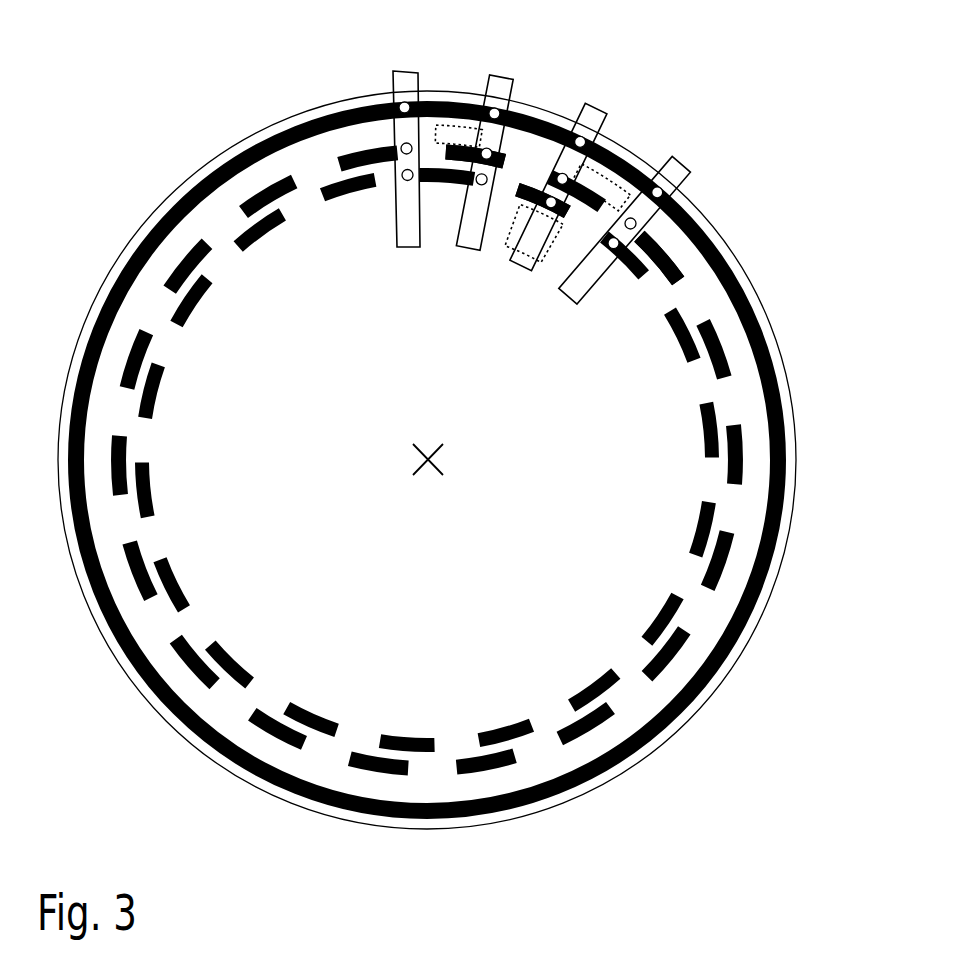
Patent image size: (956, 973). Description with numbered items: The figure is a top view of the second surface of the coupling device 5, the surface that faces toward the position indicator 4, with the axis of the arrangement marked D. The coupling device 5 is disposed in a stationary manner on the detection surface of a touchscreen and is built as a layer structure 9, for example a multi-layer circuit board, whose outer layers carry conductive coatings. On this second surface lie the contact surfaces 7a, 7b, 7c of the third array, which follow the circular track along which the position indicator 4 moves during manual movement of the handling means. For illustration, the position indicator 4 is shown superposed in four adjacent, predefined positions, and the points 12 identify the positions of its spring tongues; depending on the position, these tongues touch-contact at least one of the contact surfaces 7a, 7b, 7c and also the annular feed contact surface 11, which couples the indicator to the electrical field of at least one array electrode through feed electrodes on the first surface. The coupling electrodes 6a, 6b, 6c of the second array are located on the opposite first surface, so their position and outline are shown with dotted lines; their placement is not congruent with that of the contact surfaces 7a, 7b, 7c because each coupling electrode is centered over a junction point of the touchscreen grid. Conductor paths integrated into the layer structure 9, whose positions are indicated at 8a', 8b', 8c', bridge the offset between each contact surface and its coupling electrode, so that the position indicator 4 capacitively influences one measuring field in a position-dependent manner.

The position indicator 4 is at (406, 60).
The coupling device 5 is at (789, 279).
The coupling electrode 6a is at (457, 121).
The coupling electrode 6b is at (515, 215).
The coupling electrode 6c is at (684, 178).
The contact surface 7a is at (498, 109).
The contact surface 7b is at (542, 196).
The contact surface 7c is at (561, 166).
The virtual marking position 8a' is at (455, 190).
The virtual marking position 8b' is at (515, 260).
The virtual marking position 8c' is at (598, 272).
The layer structure 9 is at (535, 693).
The feed contact surface 11 is at (433, 818).
The points 12 is at (392, 128).
The axis of rotation D is at (428, 474).